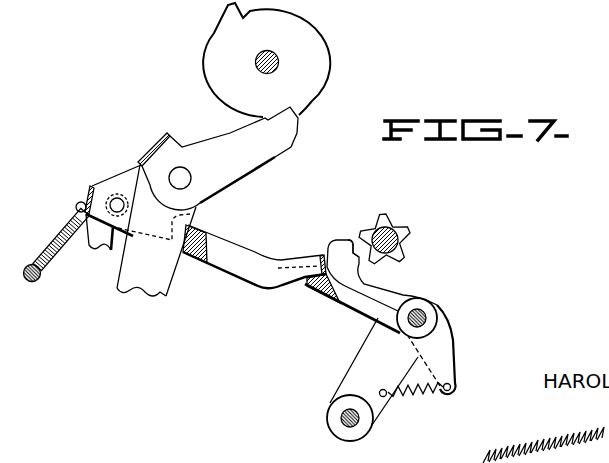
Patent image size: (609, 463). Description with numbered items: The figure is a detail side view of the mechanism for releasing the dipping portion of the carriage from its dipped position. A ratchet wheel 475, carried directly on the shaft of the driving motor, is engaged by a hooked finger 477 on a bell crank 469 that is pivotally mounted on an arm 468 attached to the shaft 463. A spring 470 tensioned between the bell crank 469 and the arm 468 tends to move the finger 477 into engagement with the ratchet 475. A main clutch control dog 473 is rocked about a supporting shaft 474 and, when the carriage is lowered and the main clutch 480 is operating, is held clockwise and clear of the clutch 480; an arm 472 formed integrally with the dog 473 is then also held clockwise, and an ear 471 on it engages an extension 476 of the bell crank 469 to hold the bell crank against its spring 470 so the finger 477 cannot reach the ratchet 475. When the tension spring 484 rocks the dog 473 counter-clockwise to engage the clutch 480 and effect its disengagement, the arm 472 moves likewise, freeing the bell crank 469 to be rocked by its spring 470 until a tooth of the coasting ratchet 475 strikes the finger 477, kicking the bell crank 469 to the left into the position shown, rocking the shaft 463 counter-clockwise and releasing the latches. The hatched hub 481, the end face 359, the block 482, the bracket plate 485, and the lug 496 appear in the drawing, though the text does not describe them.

The main clutch 480 is at (318, 35).
The cam shaft 481 is at (257, 60).
The main clutch control dog 473 is at (251, 172).
The end face of lever arm 359 is at (150, 150).
The supporting shaft 474 is at (180, 167).
The arm 472 is at (228, 266).
The ear 471 is at (320, 256).
The extension 476 is at (306, 284).
The bracket block 482 is at (122, 265).
The bracket plate 485 is at (90, 186).
The bracket lug 496 is at (100, 237).
The tension spring 484 is at (60, 233).
The ratchet wheel 475 is at (405, 240).
The bell crank 469 is at (347, 234).
The hooked finger 477 is at (353, 248).
The arm 468 is at (372, 360).
The shaft 463 is at (357, 417).
The spring 470 is at (426, 398).